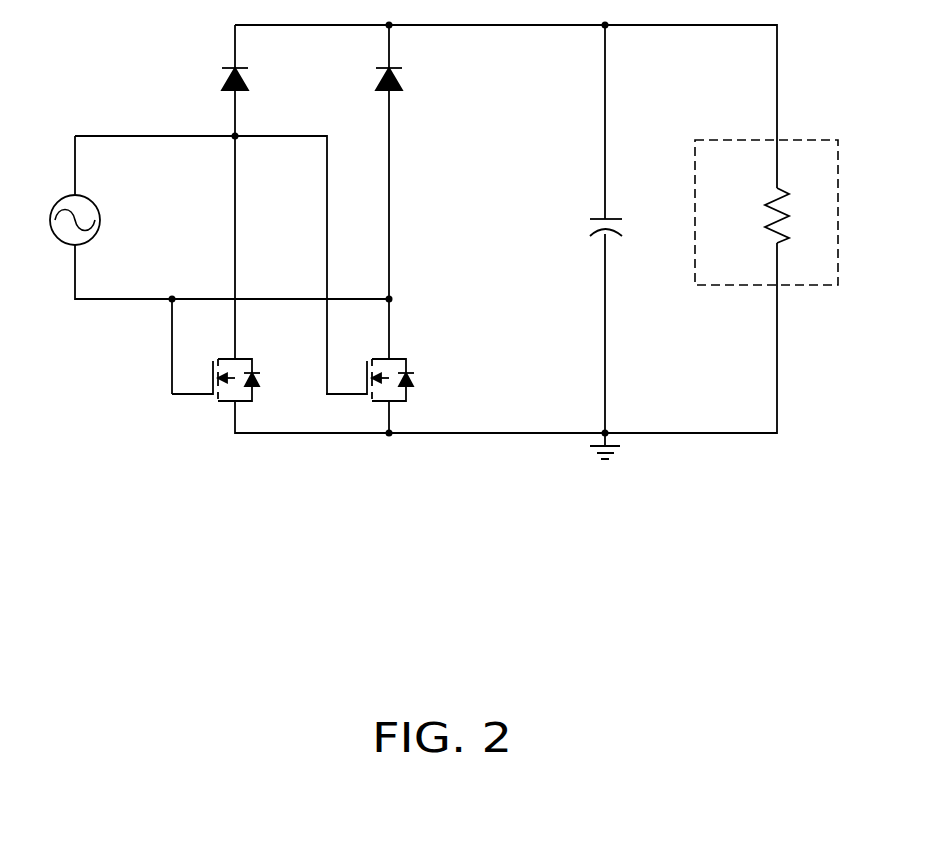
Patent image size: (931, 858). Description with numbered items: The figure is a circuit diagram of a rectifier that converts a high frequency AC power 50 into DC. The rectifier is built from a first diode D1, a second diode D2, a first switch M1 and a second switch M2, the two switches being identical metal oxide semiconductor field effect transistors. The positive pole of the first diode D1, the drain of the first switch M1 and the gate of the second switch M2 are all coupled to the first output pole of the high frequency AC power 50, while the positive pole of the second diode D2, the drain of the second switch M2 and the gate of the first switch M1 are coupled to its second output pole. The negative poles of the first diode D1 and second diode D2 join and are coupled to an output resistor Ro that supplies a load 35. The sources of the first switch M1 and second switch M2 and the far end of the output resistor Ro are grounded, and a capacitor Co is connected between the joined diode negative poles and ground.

The high frequency AC power 50 is at (65, 235).
The load 35 is at (745, 189).
The first diode D1 is at (251, 82).
The second diode D2 is at (405, 82).
The first switch M1 is at (229, 382).
The second switch M2 is at (383, 382).
The capacitor Co is at (587, 231).
The output resistor Ro is at (759, 215).